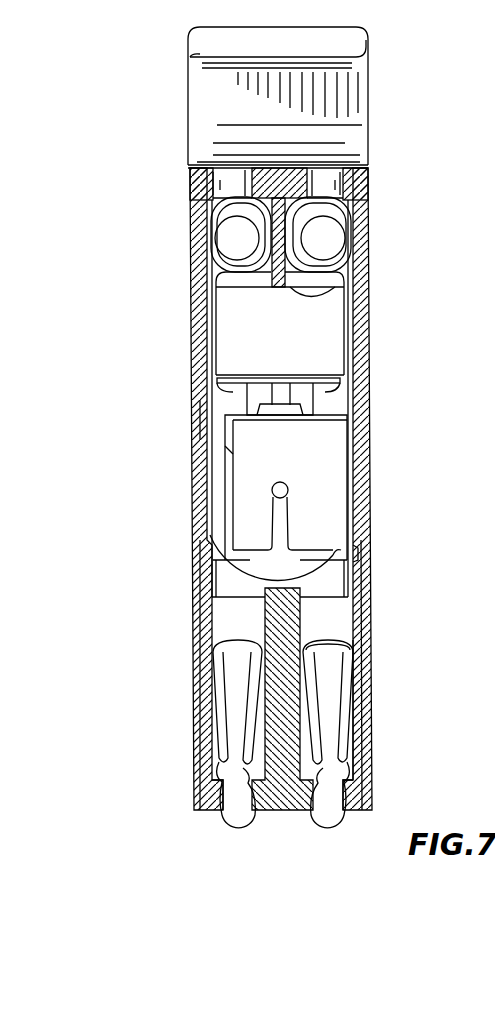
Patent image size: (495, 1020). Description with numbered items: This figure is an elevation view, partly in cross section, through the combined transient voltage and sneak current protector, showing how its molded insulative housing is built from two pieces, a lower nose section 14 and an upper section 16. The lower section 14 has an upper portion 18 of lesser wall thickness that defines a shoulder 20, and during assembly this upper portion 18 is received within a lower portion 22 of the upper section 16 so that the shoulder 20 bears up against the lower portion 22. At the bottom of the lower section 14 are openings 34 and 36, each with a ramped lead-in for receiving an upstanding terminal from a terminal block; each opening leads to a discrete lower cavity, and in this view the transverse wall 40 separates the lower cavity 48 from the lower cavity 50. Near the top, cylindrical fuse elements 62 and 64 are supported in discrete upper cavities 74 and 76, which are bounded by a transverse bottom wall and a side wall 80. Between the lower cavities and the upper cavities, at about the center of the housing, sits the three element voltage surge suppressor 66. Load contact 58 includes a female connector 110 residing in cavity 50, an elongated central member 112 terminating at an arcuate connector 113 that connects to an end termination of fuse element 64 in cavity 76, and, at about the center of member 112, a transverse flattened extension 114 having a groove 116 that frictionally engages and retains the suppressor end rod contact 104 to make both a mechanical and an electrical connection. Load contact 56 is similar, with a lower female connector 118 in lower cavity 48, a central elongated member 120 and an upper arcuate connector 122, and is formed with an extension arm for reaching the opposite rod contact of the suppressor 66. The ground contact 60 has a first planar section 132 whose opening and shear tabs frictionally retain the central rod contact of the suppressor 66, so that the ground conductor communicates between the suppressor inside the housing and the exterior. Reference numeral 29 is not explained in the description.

The lower nose section 14 is at (363, 703).
The upper section 16 is at (366, 533).
The upper portion 18 is at (360, 580).
The shoulder 20 is at (337, 655).
The lower portion 22 is at (365, 605).
The shoulder 29 is at (355, 557).
The opening 34 is at (232, 810).
The opening 36 is at (333, 795).
The transverse wall 40 is at (288, 733).
The lower cavity 48 is at (225, 787).
The lower cavity 50 is at (310, 758).
The load contact 56 is at (200, 418).
The load contact 58 is at (350, 374).
The ground contact 60 is at (340, 398).
The fuse element 62 is at (215, 238).
The fuse element 64 is at (333, 227).
The voltage surge suppressor 66 is at (240, 578).
The upper cavity 74 is at (213, 205).
The upper cavity 76 is at (337, 193).
The side wall 80 is at (367, 278).
The end rod contact 104 is at (288, 495).
The female connector 110 is at (340, 686).
The elongated central member 112 is at (350, 315).
The arcuate connector 113 is at (357, 168).
The transverse flattened extension 114 is at (332, 437).
The groove 116 is at (287, 523).
The lower female connector 118 is at (222, 683).
The central elongated member 120 is at (211, 463).
The upper arcuate connector 122 is at (217, 212).
The first planar section 132 is at (215, 392).